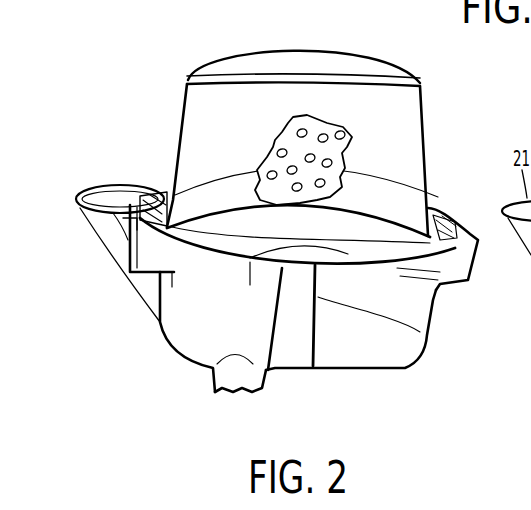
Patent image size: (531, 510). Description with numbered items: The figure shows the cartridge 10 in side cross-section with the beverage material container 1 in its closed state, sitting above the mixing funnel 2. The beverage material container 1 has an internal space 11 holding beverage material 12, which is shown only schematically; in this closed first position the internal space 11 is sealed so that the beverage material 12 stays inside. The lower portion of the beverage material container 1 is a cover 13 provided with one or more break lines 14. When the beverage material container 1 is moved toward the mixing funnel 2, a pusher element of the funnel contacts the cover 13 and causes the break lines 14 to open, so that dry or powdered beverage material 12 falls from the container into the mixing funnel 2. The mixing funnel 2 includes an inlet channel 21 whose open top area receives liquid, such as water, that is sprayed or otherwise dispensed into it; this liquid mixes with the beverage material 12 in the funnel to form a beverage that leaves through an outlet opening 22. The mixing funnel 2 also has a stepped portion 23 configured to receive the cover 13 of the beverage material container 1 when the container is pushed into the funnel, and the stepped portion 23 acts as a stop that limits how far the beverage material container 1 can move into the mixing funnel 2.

The beverage material container 1 is at (367, 77).
The mixing funnel 2 is at (413, 345).
The cartridge 10 is at (118, 110).
The internal space 11 is at (300, 105).
The beverage material 12 is at (262, 107).
The cover 13 is at (217, 245).
The break lines 14 is at (365, 240).
The inlet channel 21 is at (110, 193).
The outlet opening 22 is at (238, 393).
The stepped portion 23 is at (463, 264).